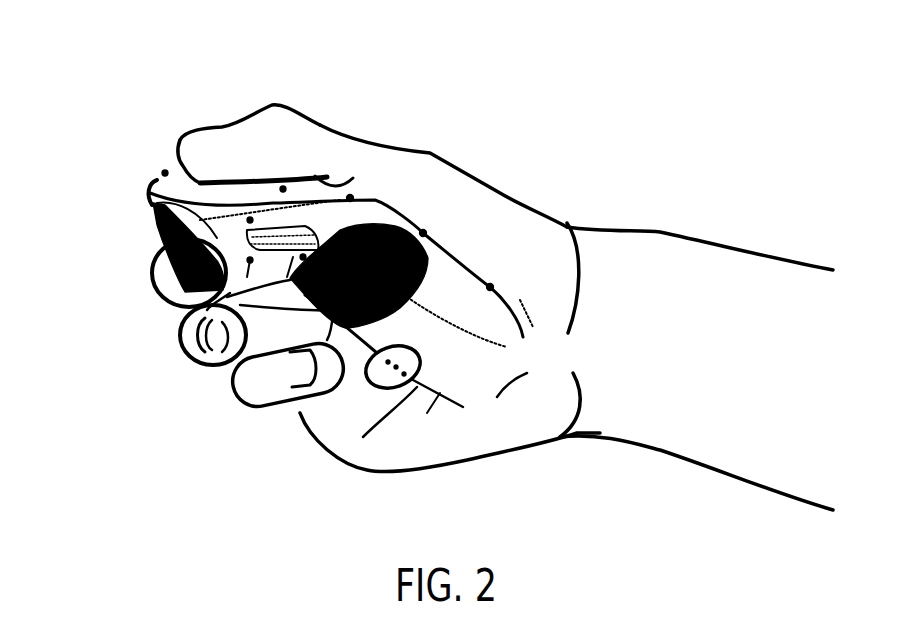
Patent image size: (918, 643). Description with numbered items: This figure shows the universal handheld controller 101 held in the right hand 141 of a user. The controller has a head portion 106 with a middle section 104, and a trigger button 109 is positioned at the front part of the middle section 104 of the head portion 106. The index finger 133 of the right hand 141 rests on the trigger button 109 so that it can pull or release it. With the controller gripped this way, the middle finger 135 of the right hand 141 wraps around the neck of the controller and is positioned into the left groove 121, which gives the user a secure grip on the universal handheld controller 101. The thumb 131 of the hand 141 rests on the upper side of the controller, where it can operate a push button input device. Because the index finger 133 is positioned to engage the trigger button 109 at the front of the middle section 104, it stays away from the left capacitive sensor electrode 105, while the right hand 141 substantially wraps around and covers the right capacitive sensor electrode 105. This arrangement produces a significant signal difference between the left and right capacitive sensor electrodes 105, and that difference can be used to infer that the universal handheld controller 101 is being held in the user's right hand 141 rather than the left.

The universal handheld controller 101 is at (455, 245).
The middle section 104 is at (217, 238).
The capacitive sensor electrode 105 is at (247, 238).
The head portion 106 is at (150, 183).
The trigger button 109 is at (180, 268).
The left groove 121 is at (407, 222).
The thumb 131 is at (247, 120).
The index finger 133 is at (153, 290).
The middle finger 135 is at (187, 347).
The right hand 141 is at (510, 195).